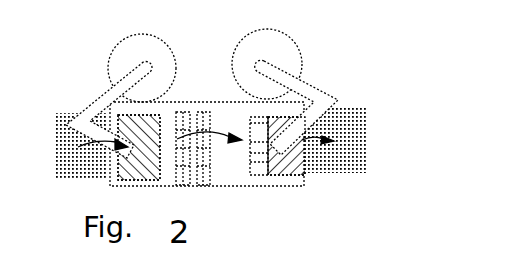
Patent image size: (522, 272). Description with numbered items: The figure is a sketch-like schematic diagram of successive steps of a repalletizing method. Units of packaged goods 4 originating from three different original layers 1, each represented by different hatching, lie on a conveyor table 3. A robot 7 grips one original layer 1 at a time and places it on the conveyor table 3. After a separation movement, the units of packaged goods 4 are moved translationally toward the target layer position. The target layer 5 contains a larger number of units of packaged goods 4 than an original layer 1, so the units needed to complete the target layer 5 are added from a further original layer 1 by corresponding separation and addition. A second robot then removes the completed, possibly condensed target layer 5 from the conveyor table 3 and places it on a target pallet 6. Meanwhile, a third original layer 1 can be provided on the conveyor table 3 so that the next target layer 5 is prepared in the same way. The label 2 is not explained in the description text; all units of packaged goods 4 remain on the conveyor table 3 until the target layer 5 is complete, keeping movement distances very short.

The original layer 1 is at (157, 186).
The inlet block 2 is at (80, 167).
The conveyor table 3 is at (238, 178).
The units of packaged goods 4 is at (134, 145).
The target layer 5 is at (293, 168).
The target pallet 6 is at (362, 161).
The robot 7 is at (118, 55).